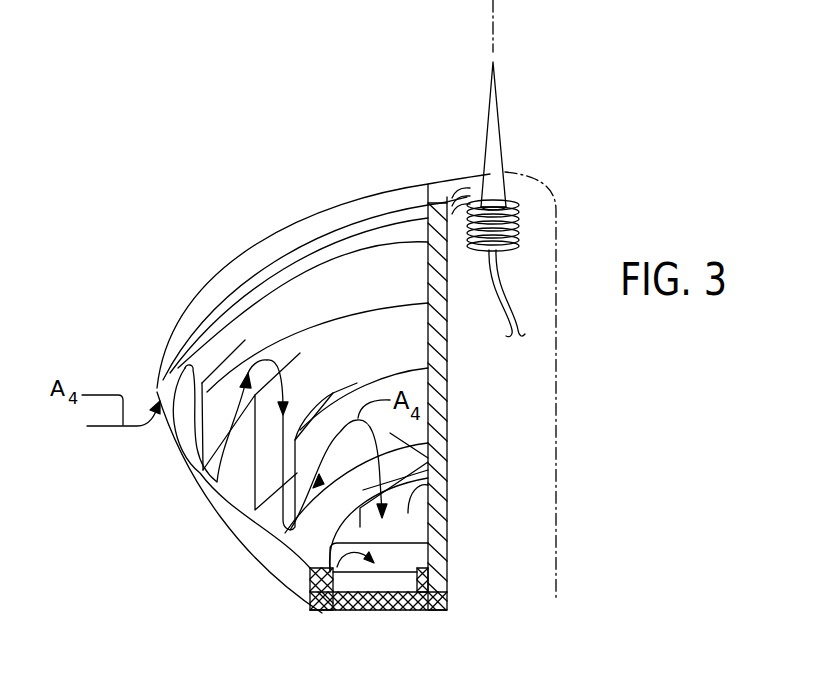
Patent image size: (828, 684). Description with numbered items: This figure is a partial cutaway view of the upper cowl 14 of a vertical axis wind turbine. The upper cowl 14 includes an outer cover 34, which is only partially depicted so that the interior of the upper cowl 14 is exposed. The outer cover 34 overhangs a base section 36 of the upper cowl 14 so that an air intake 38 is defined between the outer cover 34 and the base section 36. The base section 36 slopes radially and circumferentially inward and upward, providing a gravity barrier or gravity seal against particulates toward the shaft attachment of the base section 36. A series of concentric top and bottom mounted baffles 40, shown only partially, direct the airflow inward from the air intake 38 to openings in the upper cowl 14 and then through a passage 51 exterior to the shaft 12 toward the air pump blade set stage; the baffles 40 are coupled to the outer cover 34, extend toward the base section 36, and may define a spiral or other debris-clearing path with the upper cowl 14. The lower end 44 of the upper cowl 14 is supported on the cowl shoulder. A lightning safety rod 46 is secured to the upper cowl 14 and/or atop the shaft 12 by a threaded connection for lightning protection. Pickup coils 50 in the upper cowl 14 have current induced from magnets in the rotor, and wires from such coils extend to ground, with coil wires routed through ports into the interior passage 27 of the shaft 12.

The shaft 12 is at (437, 373).
The upper cowl 14 is at (403, 138).
The interior passage 27 is at (513, 571).
The outer cover 34 is at (257, 253).
The base section 36 is at (243, 555).
The air intake 38 is at (163, 436).
The baffles 40 is at (348, 294).
The lower end 44 is at (420, 611).
The lightning safety rod 46 is at (493, 137).
The pickup coils 50 is at (386, 585).
The passage 51 is at (331, 600).